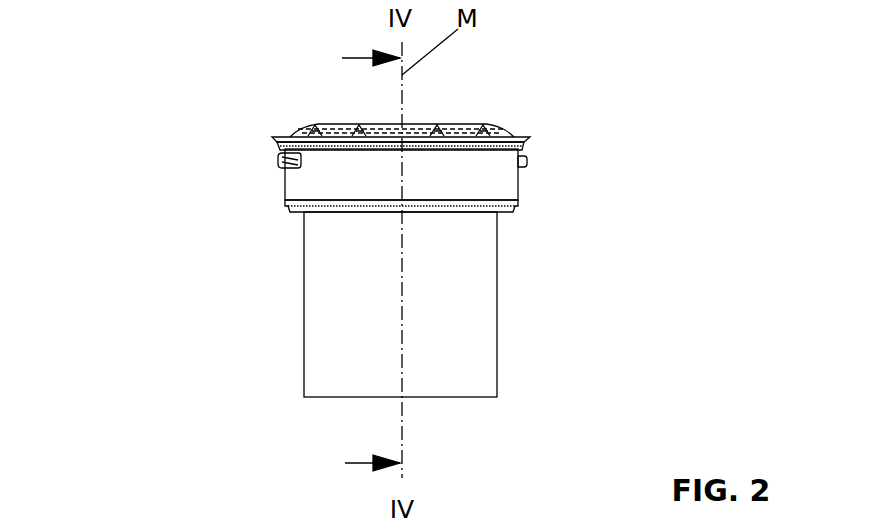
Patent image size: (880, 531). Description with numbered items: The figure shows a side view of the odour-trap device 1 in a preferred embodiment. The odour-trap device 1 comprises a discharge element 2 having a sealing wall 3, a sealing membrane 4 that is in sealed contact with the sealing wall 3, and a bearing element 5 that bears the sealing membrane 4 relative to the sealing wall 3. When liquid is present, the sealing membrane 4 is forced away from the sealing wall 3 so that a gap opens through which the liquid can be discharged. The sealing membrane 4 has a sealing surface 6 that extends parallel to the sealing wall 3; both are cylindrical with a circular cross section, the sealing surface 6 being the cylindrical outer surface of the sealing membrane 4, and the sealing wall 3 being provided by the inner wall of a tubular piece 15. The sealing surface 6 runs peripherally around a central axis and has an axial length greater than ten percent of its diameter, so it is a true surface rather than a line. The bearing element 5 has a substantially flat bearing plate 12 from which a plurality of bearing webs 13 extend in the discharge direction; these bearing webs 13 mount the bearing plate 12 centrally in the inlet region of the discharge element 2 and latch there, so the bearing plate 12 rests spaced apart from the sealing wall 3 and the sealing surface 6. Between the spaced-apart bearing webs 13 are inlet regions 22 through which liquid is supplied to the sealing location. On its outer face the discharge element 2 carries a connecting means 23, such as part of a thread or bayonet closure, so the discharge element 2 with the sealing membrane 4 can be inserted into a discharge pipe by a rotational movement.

The odour-trap device 1 is at (497, 302).
The discharge element 2 is at (335, 342).
The sealing wall 3 is at (335, 282).
The sealing surface 6 is at (335, 282).
The sealing membrane 4 is at (333, 135).
The bearing element 5 is at (470, 128).
The bearing plate 12 is at (425, 120).
The bearing webs 13 is at (360, 137).
The tubular piece 15 is at (497, 352).
The inlet regions 22 is at (385, 137).
The connecting means 23 is at (280, 160).